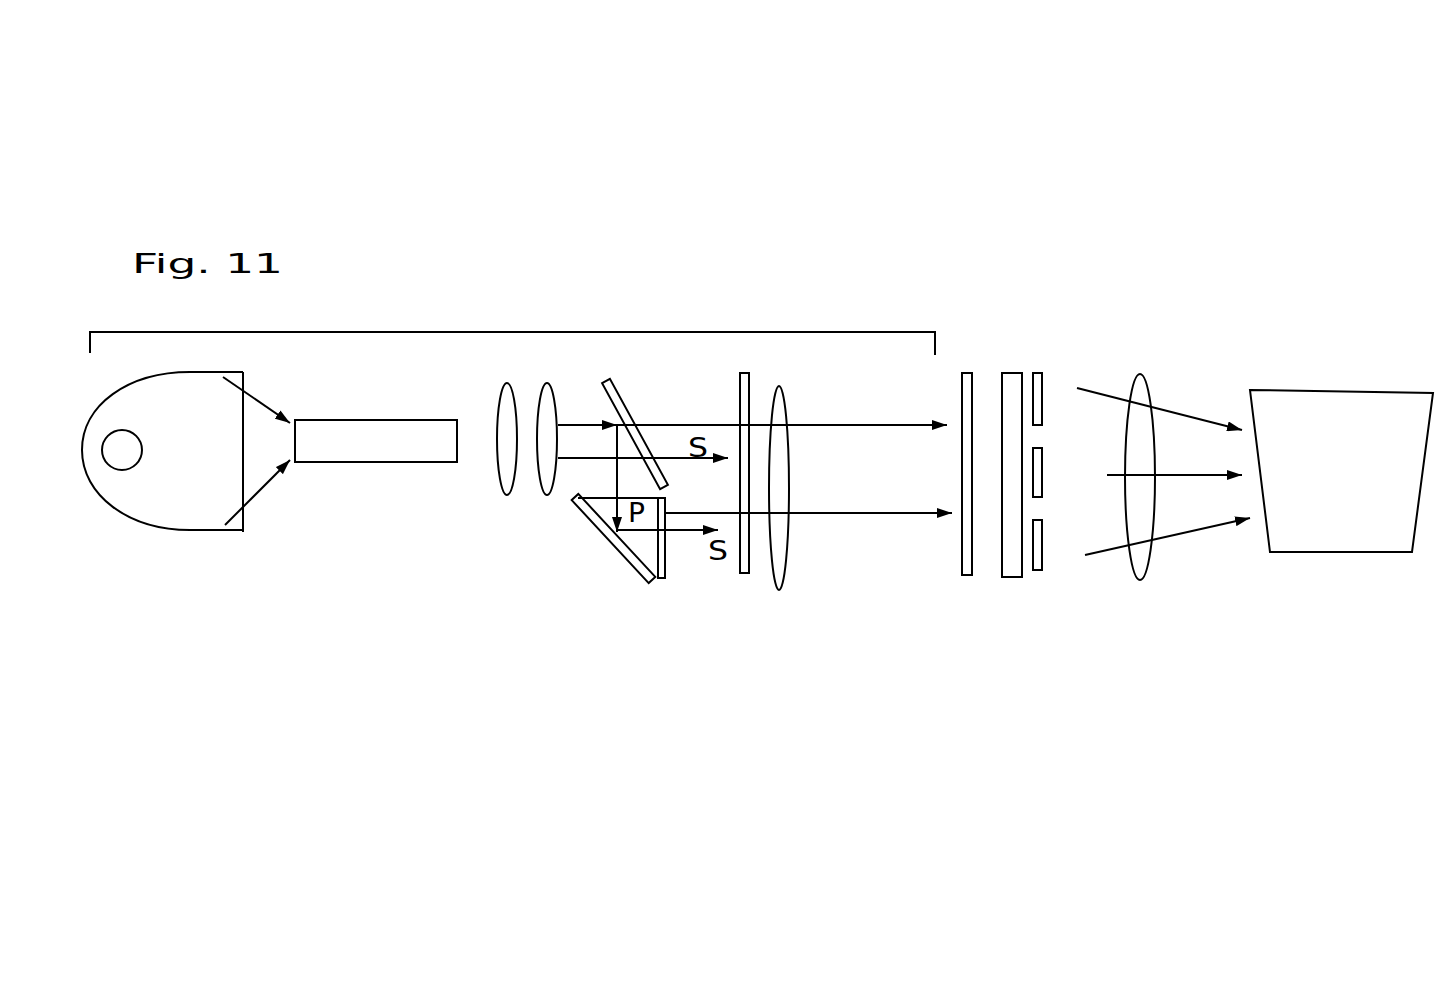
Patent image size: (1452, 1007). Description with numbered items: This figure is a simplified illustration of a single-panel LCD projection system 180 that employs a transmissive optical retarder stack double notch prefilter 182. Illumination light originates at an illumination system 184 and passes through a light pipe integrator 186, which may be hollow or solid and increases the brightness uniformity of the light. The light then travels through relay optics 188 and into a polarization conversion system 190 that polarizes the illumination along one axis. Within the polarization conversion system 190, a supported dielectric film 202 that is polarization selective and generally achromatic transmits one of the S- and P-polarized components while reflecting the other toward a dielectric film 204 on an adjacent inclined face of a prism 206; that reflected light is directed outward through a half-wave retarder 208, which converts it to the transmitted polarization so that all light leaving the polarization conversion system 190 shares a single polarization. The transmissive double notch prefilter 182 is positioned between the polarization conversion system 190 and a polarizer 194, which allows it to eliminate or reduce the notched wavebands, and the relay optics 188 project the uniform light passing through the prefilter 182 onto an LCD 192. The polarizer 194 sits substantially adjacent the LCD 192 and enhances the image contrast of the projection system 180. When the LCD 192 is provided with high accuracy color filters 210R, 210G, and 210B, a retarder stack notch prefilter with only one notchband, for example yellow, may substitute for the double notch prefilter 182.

The single-panel LCD projection system 180 is at (582, 332).
The transmissive optical retarder double notch prefilter 182 is at (744, 573).
The illumination system 184 is at (200, 533).
The light pipe integrator 186 is at (333, 453).
The relay optics 188 is at (548, 485).
The polarization conversion system 190 is at (621, 570).
The LCD 192 is at (1018, 590).
The polarizer 194 is at (967, 575).
The dielectric film 202 is at (618, 405).
The dielectric film 204 is at (585, 512).
The prism 206 is at (648, 548).
The half-wave retarder 208 is at (660, 548).
The red color filter 210R is at (1043, 382).
The green color filter 210G is at (1043, 487).
The blue color filter 210B is at (1038, 570).